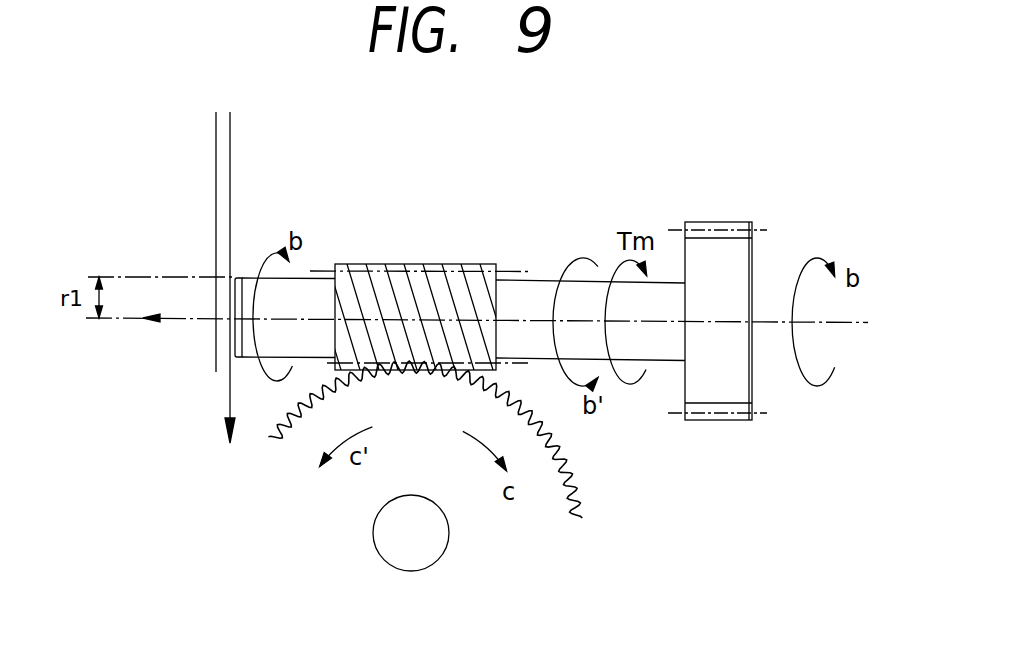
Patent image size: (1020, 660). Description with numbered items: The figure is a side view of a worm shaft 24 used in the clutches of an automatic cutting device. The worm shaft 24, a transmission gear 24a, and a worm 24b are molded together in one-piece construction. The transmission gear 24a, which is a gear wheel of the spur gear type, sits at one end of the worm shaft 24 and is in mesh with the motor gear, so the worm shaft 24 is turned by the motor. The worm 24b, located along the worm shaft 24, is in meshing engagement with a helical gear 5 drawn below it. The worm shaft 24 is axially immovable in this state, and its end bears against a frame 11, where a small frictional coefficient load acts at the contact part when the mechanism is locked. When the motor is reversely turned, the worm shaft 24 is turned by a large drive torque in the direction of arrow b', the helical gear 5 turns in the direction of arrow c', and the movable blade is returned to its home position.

The frame 11 is at (216, 137).
The worm shaft 24 is at (665, 312).
The transmission gear 24a is at (728, 222).
The worm 24b is at (496, 265).
The helical gear 5 is at (590, 508).